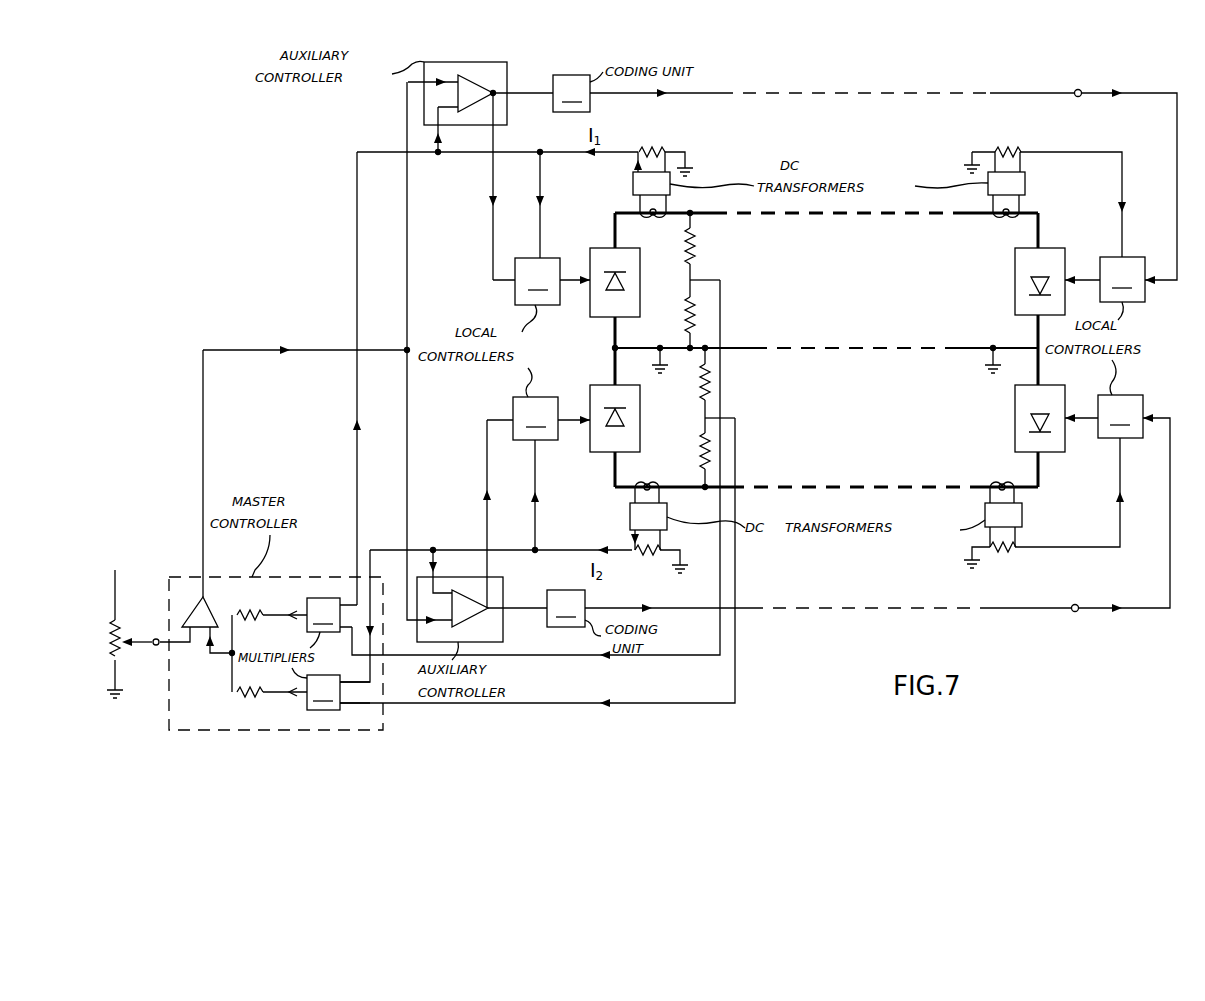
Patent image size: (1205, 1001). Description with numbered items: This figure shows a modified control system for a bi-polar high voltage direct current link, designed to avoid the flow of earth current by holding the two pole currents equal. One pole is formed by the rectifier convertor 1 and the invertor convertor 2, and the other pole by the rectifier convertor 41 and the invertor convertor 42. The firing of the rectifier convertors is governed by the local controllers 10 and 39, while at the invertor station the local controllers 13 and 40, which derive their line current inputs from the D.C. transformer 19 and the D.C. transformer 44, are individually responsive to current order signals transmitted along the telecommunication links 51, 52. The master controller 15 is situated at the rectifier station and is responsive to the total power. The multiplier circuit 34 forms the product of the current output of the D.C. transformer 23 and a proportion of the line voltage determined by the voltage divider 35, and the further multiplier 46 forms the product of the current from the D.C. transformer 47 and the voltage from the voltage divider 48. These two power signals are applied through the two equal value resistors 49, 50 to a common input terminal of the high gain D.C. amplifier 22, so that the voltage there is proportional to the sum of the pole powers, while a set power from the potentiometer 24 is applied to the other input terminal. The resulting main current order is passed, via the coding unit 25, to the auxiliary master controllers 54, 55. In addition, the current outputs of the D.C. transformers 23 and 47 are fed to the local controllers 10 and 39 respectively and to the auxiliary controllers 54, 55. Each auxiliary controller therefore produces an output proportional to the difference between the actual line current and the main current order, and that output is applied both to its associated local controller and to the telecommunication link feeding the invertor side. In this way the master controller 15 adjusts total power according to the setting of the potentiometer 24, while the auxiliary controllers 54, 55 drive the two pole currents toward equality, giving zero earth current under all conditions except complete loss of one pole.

The convertor 1 is at (659, 429).
The convertor 2 is at (1004, 429).
The local controller 10 is at (536, 502).
The local controller 13 is at (1079, 471).
The master controller 15 is at (305, 577).
The D.C. current transformer 19 is at (1022, 517).
The high gain D.C. amplifier 22 is at (210, 612).
The D.C. current transformer 23 is at (630, 517).
The potentiometer 24 is at (125, 620).
The coding unit 25 is at (539, 351).
The multiplier circuit 34 is at (338, 692).
The voltage divider 35 is at (712, 410).
The local controller 39 is at (541, 281).
The local controller 40 is at (1105, 279).
The convertor 41 is at (666, 291).
The convertor 42 is at (1008, 291).
The D.C. transformer 44 is at (1025, 186).
The multiplier 46 is at (332, 615).
The D.C. transformer 47 is at (633, 186).
The voltage divider 48 is at (702, 272).
The resistor 49 is at (270, 610).
The resistor 50 is at (270, 687).
The telecommunication link 51 is at (905, 93).
The telecommunication link 52 is at (920, 607).
The auxiliary master controller 54 is at (507, 66).
The auxiliary master controller 55 is at (503, 585).